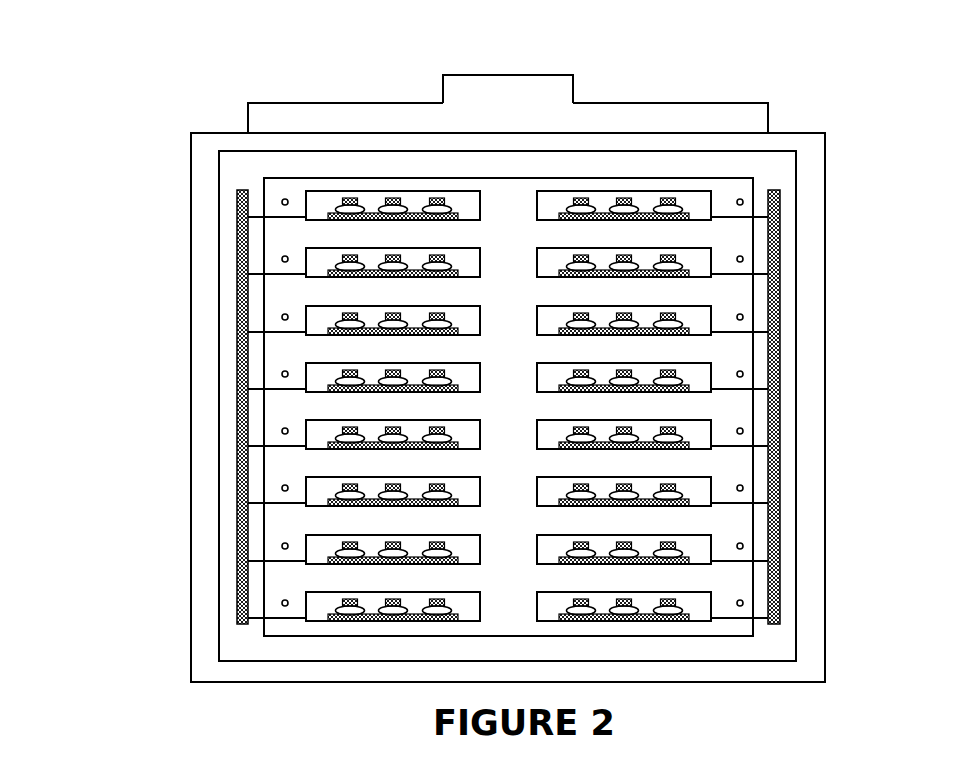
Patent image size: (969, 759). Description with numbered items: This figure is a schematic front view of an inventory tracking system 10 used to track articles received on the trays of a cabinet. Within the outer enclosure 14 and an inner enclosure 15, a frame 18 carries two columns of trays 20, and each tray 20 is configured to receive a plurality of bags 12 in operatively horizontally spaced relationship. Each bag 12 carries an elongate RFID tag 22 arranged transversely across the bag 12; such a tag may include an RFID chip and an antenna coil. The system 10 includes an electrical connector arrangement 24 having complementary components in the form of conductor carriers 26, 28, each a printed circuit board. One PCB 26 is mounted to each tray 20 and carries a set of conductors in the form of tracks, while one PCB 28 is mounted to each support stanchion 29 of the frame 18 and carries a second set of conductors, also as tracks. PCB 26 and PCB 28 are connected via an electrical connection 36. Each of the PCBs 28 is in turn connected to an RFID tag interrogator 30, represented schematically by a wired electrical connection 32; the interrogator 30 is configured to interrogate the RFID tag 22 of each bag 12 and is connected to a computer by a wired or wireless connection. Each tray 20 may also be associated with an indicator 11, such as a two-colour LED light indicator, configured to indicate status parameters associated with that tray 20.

The inventory tracking system 10 is at (178, 120).
The indicator 11 is at (741, 197).
The bag 12 is at (350, 556).
The outer housing 14 is at (199, 176).
The inner housing 15 is at (798, 132).
The frame 18 is at (785, 293).
The tray 20 is at (315, 263).
The RFID tag 22 is at (702, 432).
The electrical connector arrangement 24 is at (234, 240).
The conductor carrier 26 is at (337, 504).
The conductor carrier 28 is at (497, 400).
The support stanchion 29 is at (785, 332).
The RFID tag interrogator 30 is at (553, 103).
The wired electrical connection 32 is at (362, 103).
The electrical connection 36 is at (282, 332).